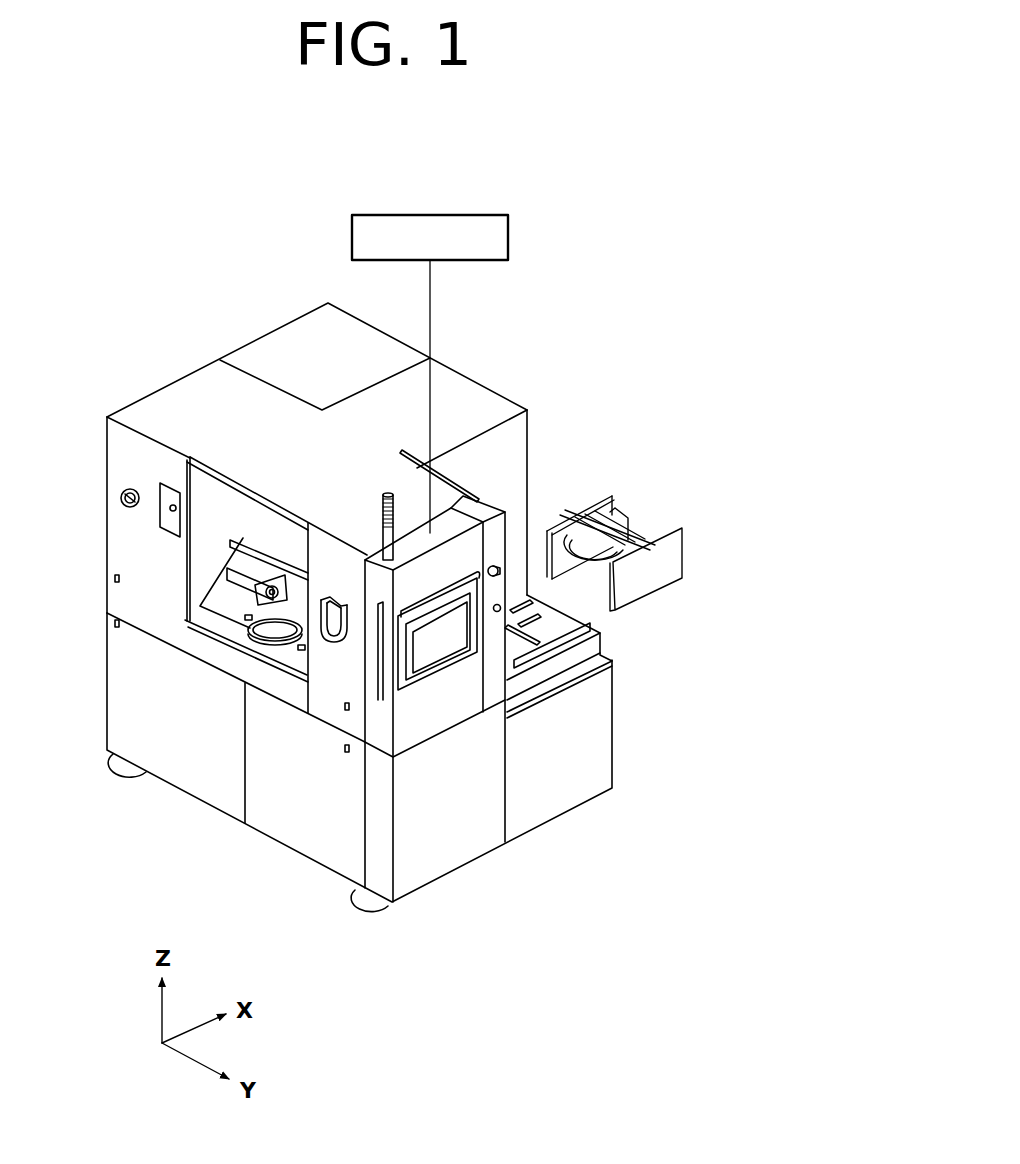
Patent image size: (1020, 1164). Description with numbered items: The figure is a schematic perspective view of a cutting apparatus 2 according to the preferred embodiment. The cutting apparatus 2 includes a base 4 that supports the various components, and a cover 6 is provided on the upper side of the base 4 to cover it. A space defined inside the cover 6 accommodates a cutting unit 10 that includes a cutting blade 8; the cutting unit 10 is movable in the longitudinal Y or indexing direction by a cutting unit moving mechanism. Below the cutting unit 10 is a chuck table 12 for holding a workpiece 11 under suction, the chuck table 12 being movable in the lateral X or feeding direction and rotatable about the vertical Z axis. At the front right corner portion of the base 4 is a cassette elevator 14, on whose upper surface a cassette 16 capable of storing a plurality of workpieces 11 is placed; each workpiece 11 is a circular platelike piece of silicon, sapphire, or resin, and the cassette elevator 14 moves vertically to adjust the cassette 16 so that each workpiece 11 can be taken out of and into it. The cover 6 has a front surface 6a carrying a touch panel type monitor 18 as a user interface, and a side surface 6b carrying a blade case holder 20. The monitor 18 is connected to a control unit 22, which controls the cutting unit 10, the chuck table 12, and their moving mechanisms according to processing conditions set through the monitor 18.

The cutting apparatus 2 is at (214, 218).
The base 4 is at (208, 787).
The cover 6 is at (167, 403).
The front surface 6a is at (413, 730).
The side surface 6b is at (330, 710).
The cutting blade 8 is at (272, 587).
The cutting unit 10 is at (243, 593).
The workpiece 11 is at (592, 547).
The chuck table 12 is at (247, 647).
The cassette elevator 14 is at (610, 642).
The cassette 16 is at (694, 544).
The touch panel type monitor 18 is at (428, 655).
The blade case holder 20 is at (333, 600).
The control unit 22 is at (415, 215).